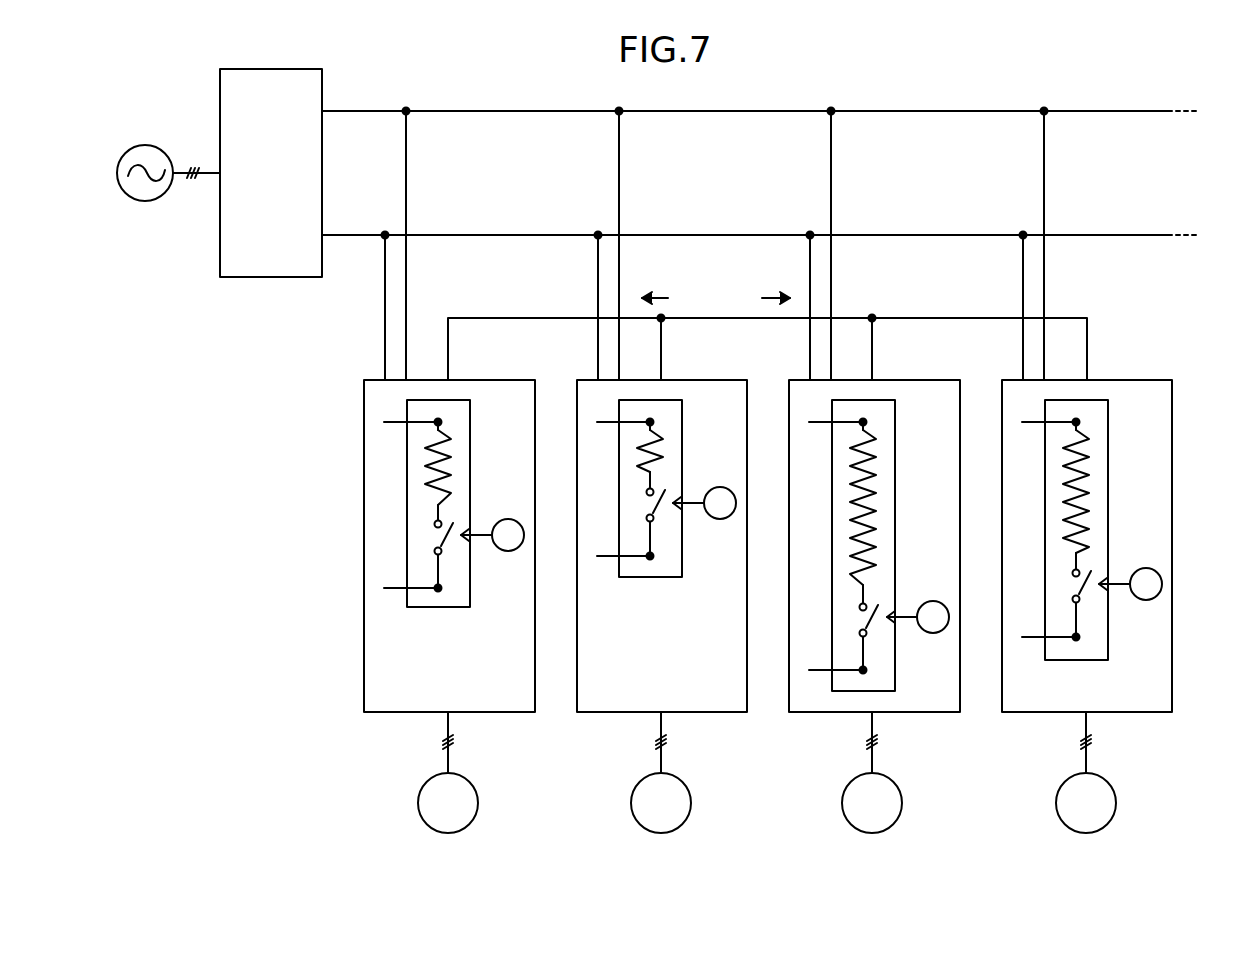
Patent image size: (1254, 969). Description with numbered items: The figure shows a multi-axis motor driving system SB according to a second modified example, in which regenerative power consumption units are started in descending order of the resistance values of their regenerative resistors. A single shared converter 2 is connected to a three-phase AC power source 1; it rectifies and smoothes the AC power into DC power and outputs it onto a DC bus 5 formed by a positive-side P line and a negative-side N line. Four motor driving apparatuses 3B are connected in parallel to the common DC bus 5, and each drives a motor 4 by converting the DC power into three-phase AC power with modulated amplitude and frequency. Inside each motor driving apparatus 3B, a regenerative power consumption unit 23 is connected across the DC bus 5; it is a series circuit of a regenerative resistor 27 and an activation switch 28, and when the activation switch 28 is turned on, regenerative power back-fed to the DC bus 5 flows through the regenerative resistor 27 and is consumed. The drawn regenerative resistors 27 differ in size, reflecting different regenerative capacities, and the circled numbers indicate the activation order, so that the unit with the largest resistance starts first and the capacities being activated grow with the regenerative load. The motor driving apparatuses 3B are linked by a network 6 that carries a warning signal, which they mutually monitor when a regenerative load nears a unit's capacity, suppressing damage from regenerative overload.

The three-phase AC power source 1 is at (126, 152).
The converter 2 is at (268, 278).
The motor driving apparatus 3B is at (411, 546).
The motor 4 is at (423, 782).
The DC bus 5 is at (1148, 112).
The network 6 is at (1087, 343).
The regenerative power consumption unit 23 is at (399, 538).
The regenerative resistor 27 is at (423, 487).
The activation switch 28 is at (444, 553).
The multi-axis motor driving system SB is at (1102, 81).